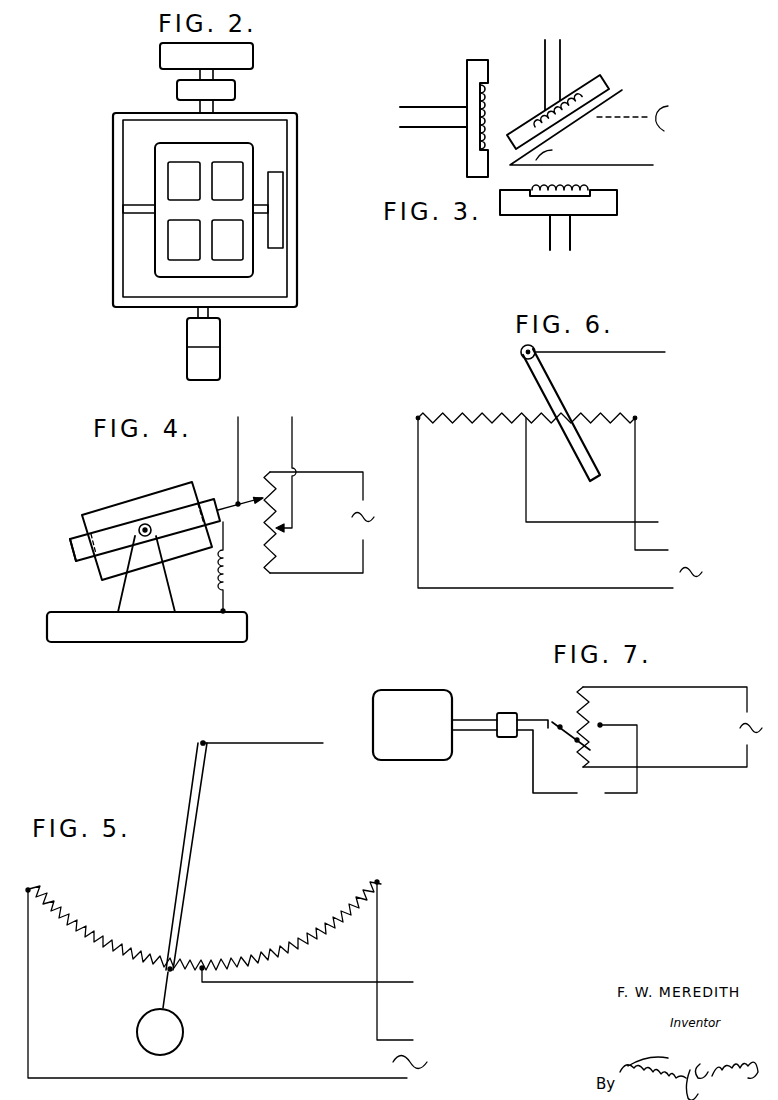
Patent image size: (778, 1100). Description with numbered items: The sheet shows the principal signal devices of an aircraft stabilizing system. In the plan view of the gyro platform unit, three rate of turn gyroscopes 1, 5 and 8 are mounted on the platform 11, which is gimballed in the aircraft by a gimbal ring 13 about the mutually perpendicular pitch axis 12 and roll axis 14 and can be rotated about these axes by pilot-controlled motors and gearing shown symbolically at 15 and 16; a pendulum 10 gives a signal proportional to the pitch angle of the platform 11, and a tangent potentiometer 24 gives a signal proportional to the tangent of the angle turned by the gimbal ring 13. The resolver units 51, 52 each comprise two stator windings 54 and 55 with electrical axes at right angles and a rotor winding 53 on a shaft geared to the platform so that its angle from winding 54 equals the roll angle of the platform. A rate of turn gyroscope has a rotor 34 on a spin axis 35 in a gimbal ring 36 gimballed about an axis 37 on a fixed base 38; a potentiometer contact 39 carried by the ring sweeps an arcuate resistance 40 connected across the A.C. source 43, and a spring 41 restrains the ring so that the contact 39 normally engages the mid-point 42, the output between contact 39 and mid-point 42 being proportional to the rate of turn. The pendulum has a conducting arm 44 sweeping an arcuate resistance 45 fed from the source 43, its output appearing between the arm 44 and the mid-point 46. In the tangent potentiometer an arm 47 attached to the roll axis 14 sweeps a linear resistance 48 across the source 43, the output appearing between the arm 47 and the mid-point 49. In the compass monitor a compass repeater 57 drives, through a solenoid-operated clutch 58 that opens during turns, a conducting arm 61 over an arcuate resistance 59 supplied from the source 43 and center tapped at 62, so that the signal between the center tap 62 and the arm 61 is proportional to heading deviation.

In FIG. 2, the rate of turn gyro 1 is at (178, 180).
In FIG. 2, the rate of roll gyro 5 is at (233, 179).
In FIG. 2, the rate of pitch gyro 8 is at (235, 243).
In FIG. 2, the pendulum 10 is at (180, 240).
In FIG. 2, the platform 11 is at (240, 152).
In FIG. 2, the pitch axis 12 is at (137, 214).
In FIG. 2, the gimbal ring 13 is at (298, 160).
In FIG. 2, the roll axis 14 is at (198, 311).
In FIG. 6, the roll axis 14 is at (520, 352).
In FIG. 2, the motor and gearing 15 is at (283, 210).
In FIG. 2, the motor and gearing 16 is at (162, 57).
In FIG. 2, the tangent potentiometer 24 is at (178, 91).
In FIG. 4, the rotor 34 is at (186, 492).
In FIG. 4, the spin axis 35 is at (70, 537).
In FIG. 4, the gimbal ring 36 is at (84, 562).
In FIG. 4, the gimbal axis 37 is at (142, 526).
In FIG. 4, the fixed base 38 is at (158, 625).
In FIG. 4, the potentiometer contact 39 is at (238, 506).
In FIG. 4, the arcuate potentiometer resistance 40 is at (276, 557).
In FIG. 4, the spring 41 is at (228, 580).
In FIG. 4, the mid-point 42 is at (278, 531).
In FIG. 6, the A.C. source 43 is at (678, 570).
In FIG. 4, the A.C. source 43 is at (372, 511).
In FIG. 7, the A.C. source 43 is at (738, 722).
In FIG. 5, the A.C. source 43 is at (416, 1055).
In FIG. 5, the pendulum arm 44 is at (196, 815).
In FIG. 5, the arcuate resistance 45 is at (78, 928).
In FIG. 5, the mid-point 46 is at (200, 978).
In FIG. 6, the arm 47 is at (548, 388).
In FIG. 6, the linear resistance 48 is at (465, 416).
In FIG. 6, the mid-point 49 is at (522, 419).
In FIG. 2, the resolver 51 is at (210, 343).
In FIG. 2, the resolver 52 is at (208, 370).
In FIG. 3, the rotor winding 53 is at (570, 120).
In FIG. 3, the stator winding 54 is at (522, 87).
In FIG. 3, the stator winding 55 is at (575, 197).
In FIG. 7, the compass repeater 57 is at (370, 725).
In FIG. 7, the solenoid-operated clutch 58 is at (505, 718).
In FIG. 7, the arcuate resistance 59 is at (594, 707).
In FIG. 7, the conducting arm 61 is at (572, 736).
In FIG. 7, the center tap 62 is at (604, 726).